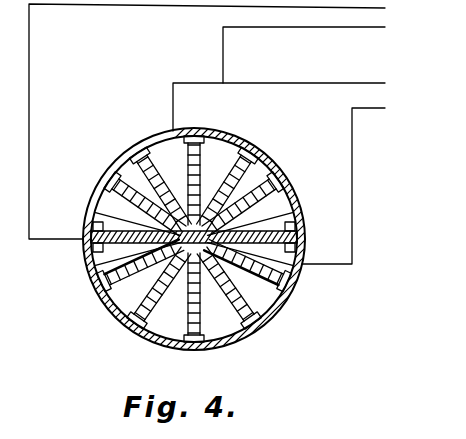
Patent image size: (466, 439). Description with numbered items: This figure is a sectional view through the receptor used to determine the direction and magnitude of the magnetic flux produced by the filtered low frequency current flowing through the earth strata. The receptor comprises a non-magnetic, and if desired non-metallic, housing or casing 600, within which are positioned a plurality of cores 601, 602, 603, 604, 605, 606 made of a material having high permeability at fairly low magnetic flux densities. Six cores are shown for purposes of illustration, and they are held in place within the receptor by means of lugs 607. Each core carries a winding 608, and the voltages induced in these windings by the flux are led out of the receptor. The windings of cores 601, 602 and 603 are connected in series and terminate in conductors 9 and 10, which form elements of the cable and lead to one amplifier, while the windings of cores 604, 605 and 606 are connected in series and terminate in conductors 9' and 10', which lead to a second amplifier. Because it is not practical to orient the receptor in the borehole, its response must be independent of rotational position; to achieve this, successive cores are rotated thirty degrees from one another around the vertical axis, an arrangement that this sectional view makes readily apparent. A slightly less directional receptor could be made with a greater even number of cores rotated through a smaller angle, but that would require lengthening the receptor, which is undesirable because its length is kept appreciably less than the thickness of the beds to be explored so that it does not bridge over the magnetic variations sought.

The conductor 10 is at (207, 121).
The conductor 9 is at (304, 55).
The conductor 10' is at (279, 93).
The conductor 9' is at (343, 186).
The housing or casing 600 is at (273, 156).
The core 601 is at (286, 221).
The core 602 is at (284, 186).
The core 603 is at (247, 142).
The core 604 is at (196, 129).
The core 605 is at (148, 144).
The core 606 is at (106, 176).
The lug 607 is at (118, 300).
The winding 608 is at (87, 218).